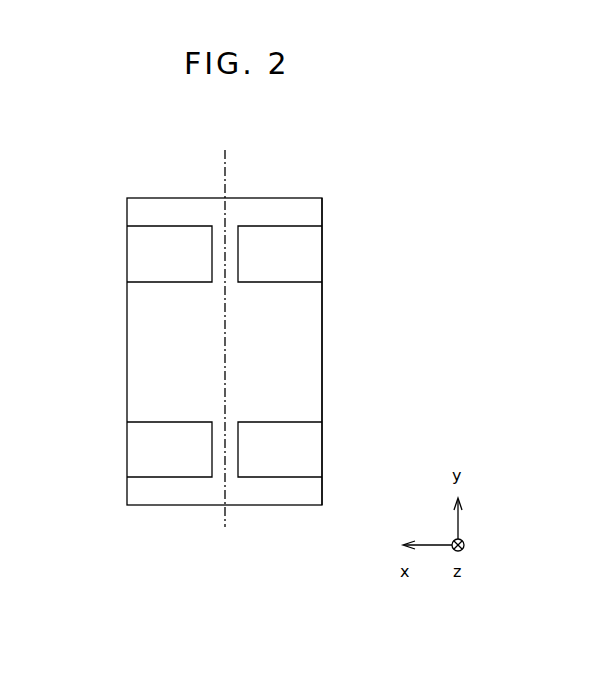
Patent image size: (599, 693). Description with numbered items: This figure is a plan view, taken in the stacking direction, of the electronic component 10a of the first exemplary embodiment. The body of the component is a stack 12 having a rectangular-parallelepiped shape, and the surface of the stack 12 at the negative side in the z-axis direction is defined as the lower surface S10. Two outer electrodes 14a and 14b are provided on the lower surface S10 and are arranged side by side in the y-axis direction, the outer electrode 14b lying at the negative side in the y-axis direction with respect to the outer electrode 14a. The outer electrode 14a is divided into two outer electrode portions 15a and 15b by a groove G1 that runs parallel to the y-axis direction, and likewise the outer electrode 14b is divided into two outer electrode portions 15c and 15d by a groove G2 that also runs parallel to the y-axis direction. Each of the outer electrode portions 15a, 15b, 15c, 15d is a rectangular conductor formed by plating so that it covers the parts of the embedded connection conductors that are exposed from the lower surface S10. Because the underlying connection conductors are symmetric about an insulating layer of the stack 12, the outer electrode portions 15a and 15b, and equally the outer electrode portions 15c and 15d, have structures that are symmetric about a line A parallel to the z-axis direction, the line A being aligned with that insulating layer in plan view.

The electronic component 10a is at (92, 142).
The stack 12 is at (249, 195).
The lower surface S10 is at (302, 383).
The outer electrode 14a is at (224, 299).
The outer electrode 14b is at (224, 509).
The outer electrode portion 15a is at (253, 264).
The outer electrode portion 15b is at (195, 264).
The outer electrode portion 15c is at (254, 452).
The outer electrode portion 15d is at (196, 452).
The groove G1 is at (222, 245).
The groove G2 is at (233, 437).
The line A is at (225, 326).